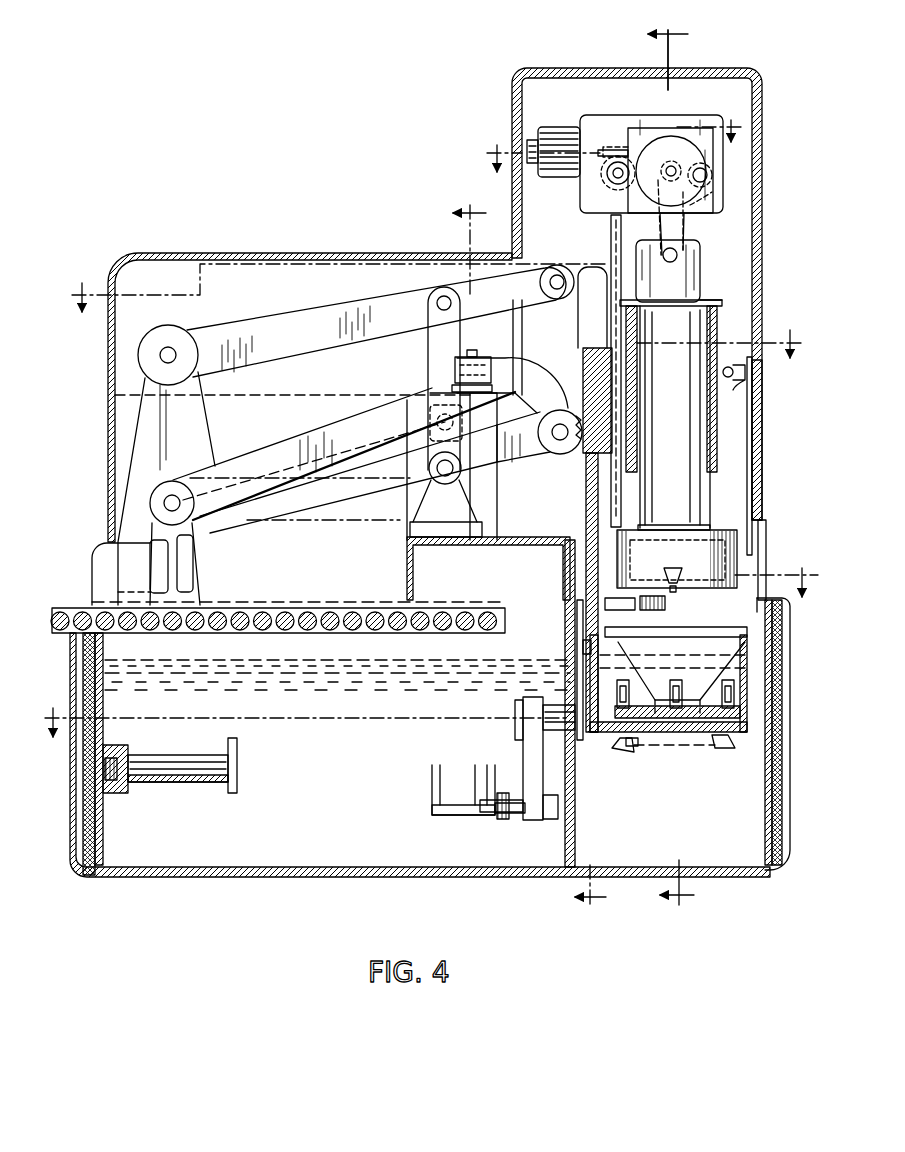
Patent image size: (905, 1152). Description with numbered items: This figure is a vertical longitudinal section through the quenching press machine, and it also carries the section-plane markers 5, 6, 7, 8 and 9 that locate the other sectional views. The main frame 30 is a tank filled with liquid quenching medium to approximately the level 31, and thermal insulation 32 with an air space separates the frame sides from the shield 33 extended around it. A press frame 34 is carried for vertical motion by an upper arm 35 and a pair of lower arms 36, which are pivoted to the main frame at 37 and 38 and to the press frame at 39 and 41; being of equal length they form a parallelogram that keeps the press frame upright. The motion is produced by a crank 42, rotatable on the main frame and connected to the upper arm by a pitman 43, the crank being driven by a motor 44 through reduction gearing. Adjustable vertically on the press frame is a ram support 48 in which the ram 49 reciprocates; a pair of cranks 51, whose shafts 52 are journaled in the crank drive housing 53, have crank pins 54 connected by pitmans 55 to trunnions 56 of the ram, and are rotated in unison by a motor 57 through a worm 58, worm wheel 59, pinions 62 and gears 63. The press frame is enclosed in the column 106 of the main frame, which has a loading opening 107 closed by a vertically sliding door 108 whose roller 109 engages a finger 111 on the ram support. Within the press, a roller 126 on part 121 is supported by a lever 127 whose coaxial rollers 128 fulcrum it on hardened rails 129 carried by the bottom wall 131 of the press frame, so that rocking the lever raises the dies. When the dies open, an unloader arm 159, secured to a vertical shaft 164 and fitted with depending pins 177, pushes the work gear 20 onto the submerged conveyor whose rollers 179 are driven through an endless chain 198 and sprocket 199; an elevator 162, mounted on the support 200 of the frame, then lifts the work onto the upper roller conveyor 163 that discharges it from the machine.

The section line 5- 5 is at (671, 471).
The section line 6- 6 is at (438, 307).
The section line 7- 7 is at (431, 639).
The section line 8- 8 is at (529, 558).
The section line 9- 9 is at (614, 133).
The work gear 20 is at (762, 600).
The main frame 30 is at (93, 655).
The level 31 is at (312, 661).
The thermal insulation 32 is at (100, 775).
The shield 33 is at (72, 818).
The press frame 34 is at (588, 350).
The upper arm 35 is at (288, 320).
The lower arms 36 is at (317, 476).
The pivot 37 is at (170, 350).
The pivot 38 is at (170, 498).
The pivot 39 is at (553, 275).
The pivot 41 is at (560, 422).
The crank 42 is at (437, 453).
The pitman 43 is at (432, 353).
The motor 44 is at (474, 356).
The ram support 48 is at (722, 300).
The ram 49 is at (683, 288).
The cranks 51 is at (684, 172).
The shafts 52 is at (671, 168).
The crank drive housing 53 is at (621, 147).
The crank pins 54 is at (708, 175).
The pitmans 55 is at (702, 200).
The trunnions 56 is at (678, 257).
The motor 57 is at (556, 140).
The worm 58 is at (625, 148).
The worm wheel 59 is at (608, 176).
The pinions 62 is at (622, 183).
The gears 63 is at (663, 150).
The column 106 is at (763, 243).
The opening 107 is at (768, 535).
The door 108 is at (757, 434).
The roller 109 is at (740, 375).
The finger 111 is at (752, 406).
The part 121 is at (680, 732).
The roller 126 is at (748, 661).
The supporting and actuating lever 127 is at (745, 735).
The rollers 128 is at (740, 687).
The rails 129 is at (745, 706).
The bottom wall 131 is at (632, 745).
The unloader arm 159 is at (625, 606).
The elevator 162 is at (425, 790).
The roller conveyor 163 is at (470, 602).
The vertical shaft 164 is at (620, 485).
The depending pins 177 is at (676, 594).
The rollers 179 is at (160, 762).
The endless chain 198 is at (574, 637).
The sprocket 199 is at (567, 603).
The support 200 is at (576, 826).